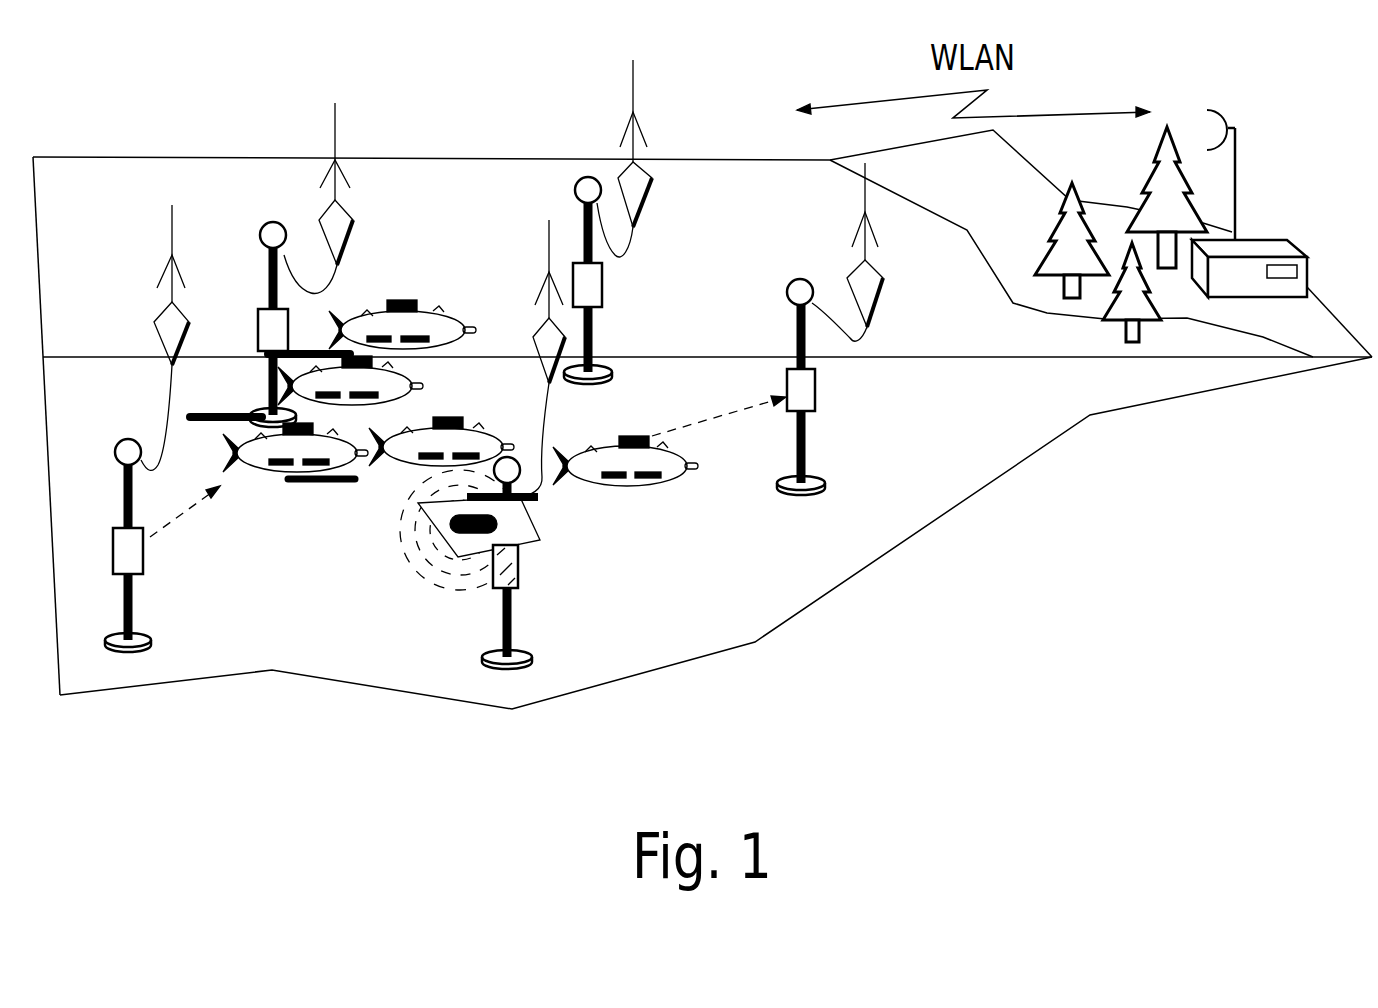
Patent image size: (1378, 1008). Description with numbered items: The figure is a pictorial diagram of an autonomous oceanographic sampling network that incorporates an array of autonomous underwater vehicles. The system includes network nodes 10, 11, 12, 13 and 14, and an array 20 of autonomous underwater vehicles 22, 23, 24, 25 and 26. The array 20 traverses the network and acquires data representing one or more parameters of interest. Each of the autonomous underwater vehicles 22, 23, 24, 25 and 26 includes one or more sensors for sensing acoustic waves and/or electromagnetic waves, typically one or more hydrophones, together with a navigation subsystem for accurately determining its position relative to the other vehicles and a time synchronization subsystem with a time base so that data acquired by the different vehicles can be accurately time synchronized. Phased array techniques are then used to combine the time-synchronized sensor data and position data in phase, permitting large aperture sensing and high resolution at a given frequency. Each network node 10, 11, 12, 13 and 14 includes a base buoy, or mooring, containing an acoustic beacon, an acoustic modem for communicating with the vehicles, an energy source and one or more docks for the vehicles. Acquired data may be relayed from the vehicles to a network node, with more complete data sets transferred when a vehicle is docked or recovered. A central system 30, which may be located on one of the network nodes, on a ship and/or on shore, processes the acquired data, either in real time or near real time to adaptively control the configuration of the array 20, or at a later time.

The network node 10 is at (139, 593).
The network node 11 is at (260, 368).
The network node 12 is at (538, 560).
The network node 13 is at (600, 393).
The network node 14 is at (822, 414).
The array of autonomous underwater vehicles 20 is at (460, 437).
The autonomous underwater vehicle 22 is at (420, 350).
The autonomous underwater vehicle 23 is at (407, 396).
The autonomous underwater vehicle 24 is at (311, 472).
The autonomous underwater vehicle 25 is at (478, 427).
The autonomous underwater vehicle 26 is at (620, 488).
The central system 30 is at (1258, 306).